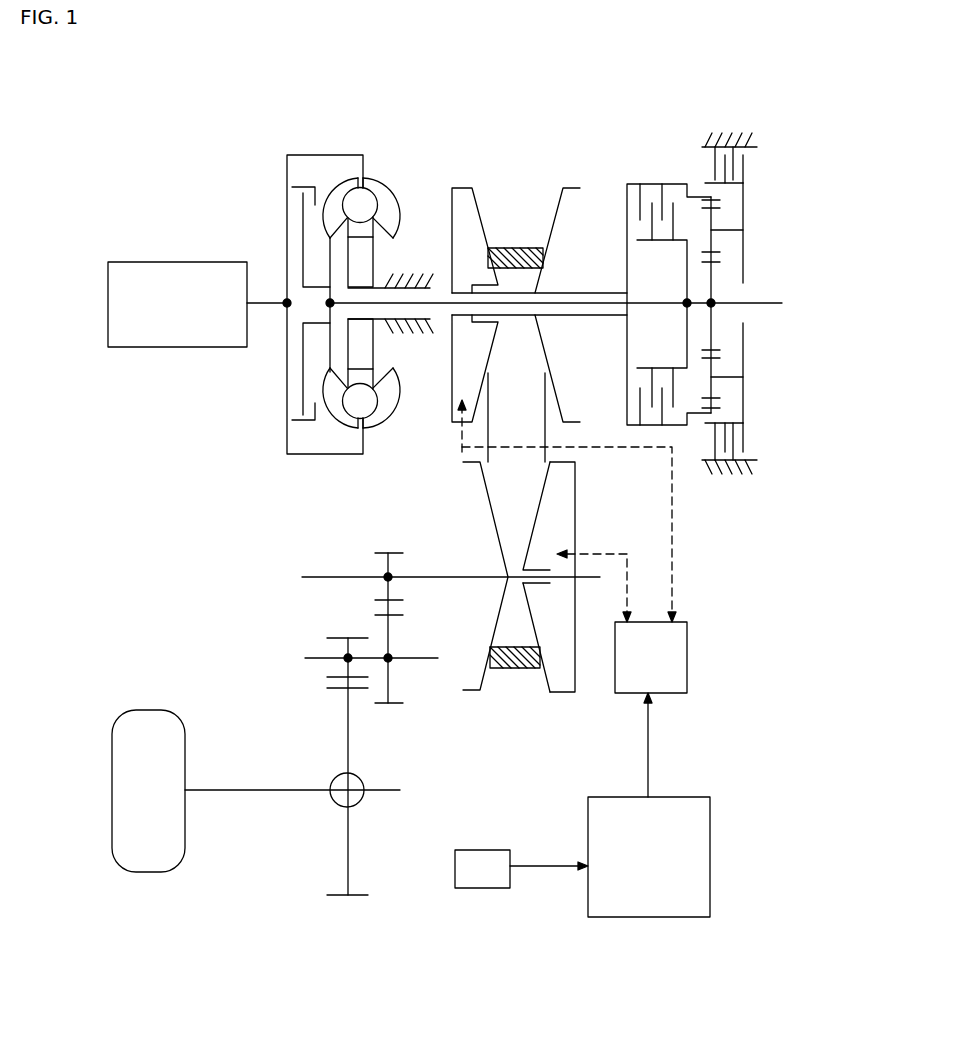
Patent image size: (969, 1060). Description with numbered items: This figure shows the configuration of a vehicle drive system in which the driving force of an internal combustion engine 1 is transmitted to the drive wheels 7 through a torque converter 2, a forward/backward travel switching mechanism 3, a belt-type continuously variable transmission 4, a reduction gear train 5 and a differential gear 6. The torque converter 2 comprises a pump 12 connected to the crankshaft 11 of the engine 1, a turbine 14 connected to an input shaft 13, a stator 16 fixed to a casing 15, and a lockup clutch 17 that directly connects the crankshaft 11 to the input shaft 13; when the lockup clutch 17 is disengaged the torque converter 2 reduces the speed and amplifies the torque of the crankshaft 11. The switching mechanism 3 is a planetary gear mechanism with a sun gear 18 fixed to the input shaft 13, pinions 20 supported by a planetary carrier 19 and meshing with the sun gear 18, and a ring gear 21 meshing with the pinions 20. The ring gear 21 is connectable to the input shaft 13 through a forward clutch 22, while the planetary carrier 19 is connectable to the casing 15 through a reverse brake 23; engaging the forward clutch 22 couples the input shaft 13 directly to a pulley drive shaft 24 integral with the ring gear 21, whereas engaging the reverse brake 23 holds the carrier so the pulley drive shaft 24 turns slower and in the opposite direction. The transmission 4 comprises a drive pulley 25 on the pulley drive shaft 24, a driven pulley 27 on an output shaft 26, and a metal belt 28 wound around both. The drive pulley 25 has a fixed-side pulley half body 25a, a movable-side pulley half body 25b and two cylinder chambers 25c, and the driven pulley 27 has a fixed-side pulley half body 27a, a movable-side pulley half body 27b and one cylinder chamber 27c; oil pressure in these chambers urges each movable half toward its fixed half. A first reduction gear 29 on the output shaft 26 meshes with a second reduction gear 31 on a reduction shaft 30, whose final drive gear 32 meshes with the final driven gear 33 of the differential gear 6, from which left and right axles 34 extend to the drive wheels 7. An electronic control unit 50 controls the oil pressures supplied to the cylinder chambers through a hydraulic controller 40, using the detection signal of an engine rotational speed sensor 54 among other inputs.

The internal combustion engine 1 is at (118, 262).
The torque converter 2 is at (353, 138).
The forward/backward travel switching mechanism 3 is at (653, 141).
The belt-type continuously variable transmission 4 is at (551, 125).
The reduction gear train 5 is at (256, 576).
The differential gear 6 is at (363, 772).
The drive wheels 7 is at (140, 710).
The crankshaft 11 is at (262, 301).
The pump 12 is at (380, 184).
The input shaft 13 is at (440, 320).
The turbine 14 is at (345, 180).
The casing 15 is at (395, 272).
The stator 16 is at (365, 237).
The lockup clutch 17 is at (286, 163).
The sun gear 18 is at (713, 263).
The planetary carrier 19 is at (745, 243).
The pinions 20 is at (712, 225).
The ring gear 21 is at (723, 198).
The forward clutch 22 is at (653, 185).
The reverse brake 23 is at (738, 165).
The pulley drive shaft 24 is at (590, 292).
The drive pulley 25 is at (505, 262).
The fixed-side pulley half body 25a is at (557, 200).
The movable-side pulley half body 25b is at (487, 200).
The cylinder chambers 25c is at (451, 144).
The output shaft 26 is at (337, 577).
The driven pulley 27 is at (560, 613).
The fixed-side pulley half body 27a is at (483, 688).
The movable-side pulley half body 27b is at (550, 688).
The cylinder chamber 27c is at (565, 490).
The metal belt 28 is at (463, 460).
The first reduction gear 29 is at (393, 552).
The reduction shaft 30 is at (313, 658).
The second reduction gear 31 is at (402, 610).
The final drive gear 32 is at (358, 637).
The final driven gear 33 is at (333, 688).
The axles 34 is at (252, 793).
The hydraulic controller 40 is at (687, 640).
The electronic control unit 50 is at (710, 827).
The engine rotational speed sensor 54 is at (478, 850).